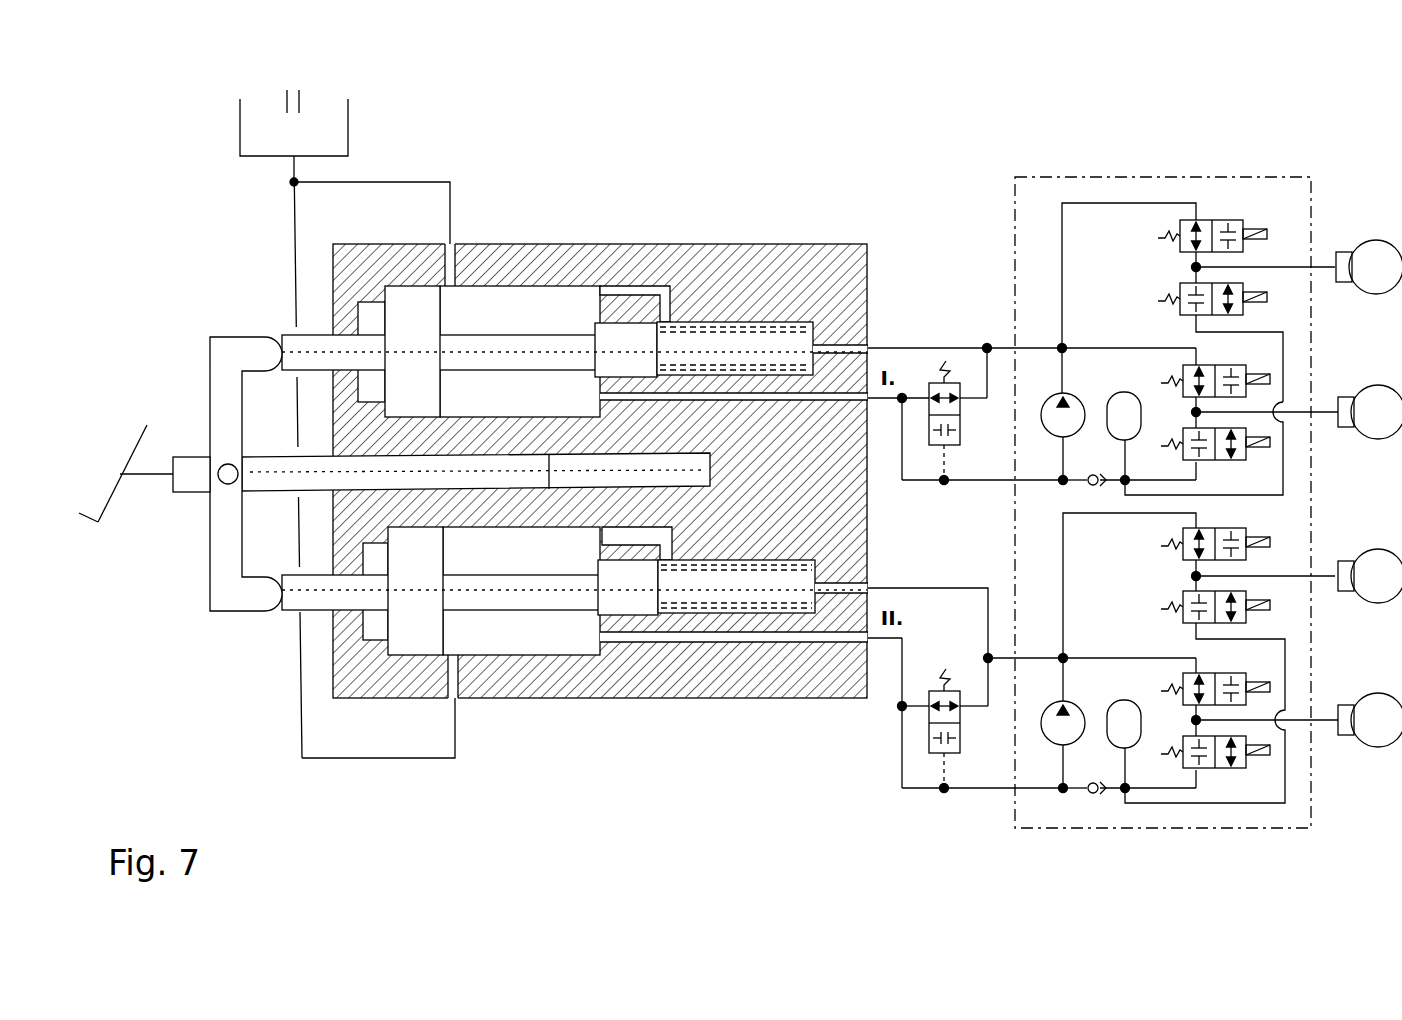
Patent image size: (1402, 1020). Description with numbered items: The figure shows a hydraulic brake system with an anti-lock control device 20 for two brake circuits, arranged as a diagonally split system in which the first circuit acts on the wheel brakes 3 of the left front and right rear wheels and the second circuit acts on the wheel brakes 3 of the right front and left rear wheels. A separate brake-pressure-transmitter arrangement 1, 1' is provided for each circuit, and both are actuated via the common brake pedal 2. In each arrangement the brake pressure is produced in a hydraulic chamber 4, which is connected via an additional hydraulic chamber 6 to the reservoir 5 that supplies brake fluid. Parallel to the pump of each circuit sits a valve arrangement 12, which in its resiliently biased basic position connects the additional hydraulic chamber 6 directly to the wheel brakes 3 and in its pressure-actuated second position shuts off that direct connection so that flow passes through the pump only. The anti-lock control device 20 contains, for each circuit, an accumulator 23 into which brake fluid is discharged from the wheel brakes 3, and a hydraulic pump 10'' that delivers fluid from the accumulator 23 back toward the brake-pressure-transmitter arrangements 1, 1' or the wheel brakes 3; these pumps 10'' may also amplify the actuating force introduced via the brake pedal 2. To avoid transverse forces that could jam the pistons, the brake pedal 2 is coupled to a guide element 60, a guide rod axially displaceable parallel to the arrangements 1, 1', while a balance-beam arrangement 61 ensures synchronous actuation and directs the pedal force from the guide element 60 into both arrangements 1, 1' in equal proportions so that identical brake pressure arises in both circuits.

The brake-pressure-transmitter arrangement 1 is at (600, 395).
The brake-pressure-transmitter arrangement 1' is at (794, 808).
The brake pedal 2 is at (120, 474).
The wheel brake 3 is at (1347, 254).
The hydraulic chamber 4 is at (714, 361).
The reservoir 5 is at (289, 145).
The additional hydraulic chamber 6 is at (525, 320).
The hydraulic pump 10'' is at (1084, 551).
The valve arrangement 12 is at (960, 445).
The anti-lock control device 20 is at (1013, 177).
The accumulator 23 is at (1133, 414).
The guide element 60 is at (298, 463).
The balance-beam arrangement 61 is at (228, 550).